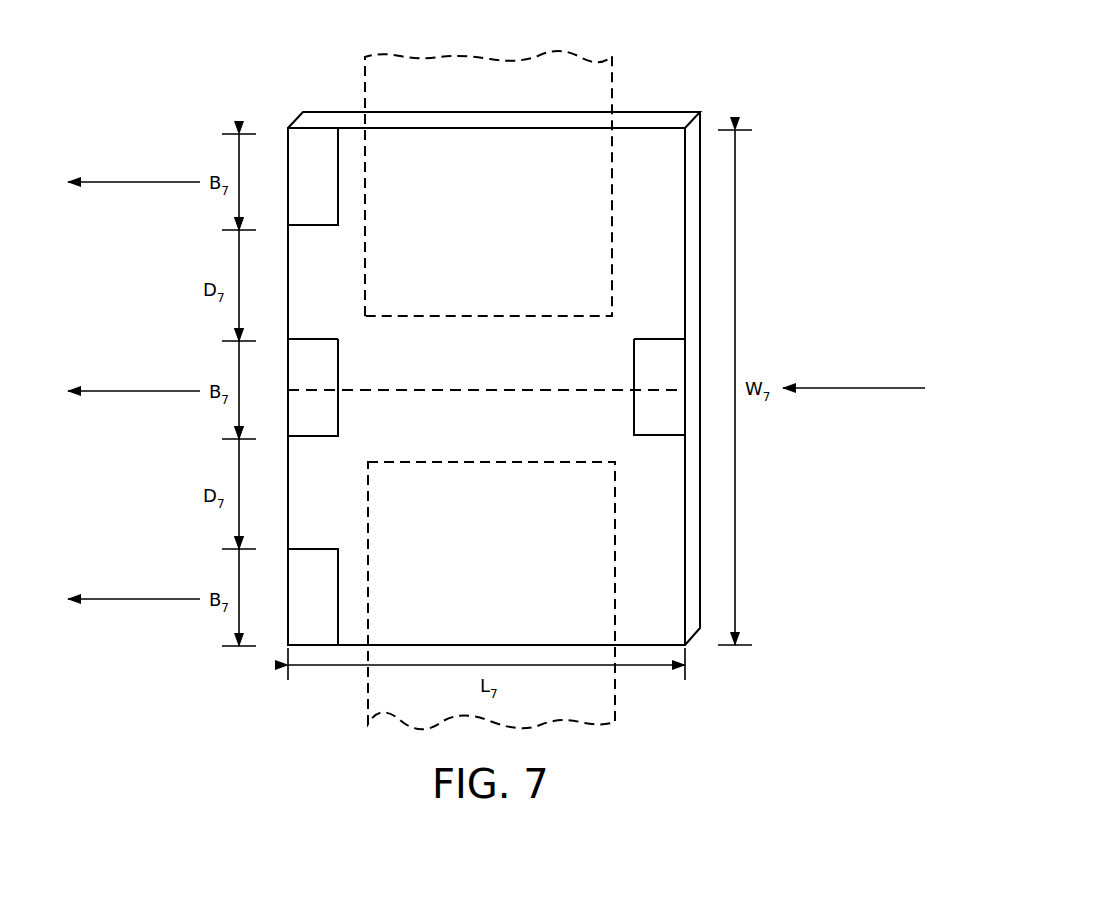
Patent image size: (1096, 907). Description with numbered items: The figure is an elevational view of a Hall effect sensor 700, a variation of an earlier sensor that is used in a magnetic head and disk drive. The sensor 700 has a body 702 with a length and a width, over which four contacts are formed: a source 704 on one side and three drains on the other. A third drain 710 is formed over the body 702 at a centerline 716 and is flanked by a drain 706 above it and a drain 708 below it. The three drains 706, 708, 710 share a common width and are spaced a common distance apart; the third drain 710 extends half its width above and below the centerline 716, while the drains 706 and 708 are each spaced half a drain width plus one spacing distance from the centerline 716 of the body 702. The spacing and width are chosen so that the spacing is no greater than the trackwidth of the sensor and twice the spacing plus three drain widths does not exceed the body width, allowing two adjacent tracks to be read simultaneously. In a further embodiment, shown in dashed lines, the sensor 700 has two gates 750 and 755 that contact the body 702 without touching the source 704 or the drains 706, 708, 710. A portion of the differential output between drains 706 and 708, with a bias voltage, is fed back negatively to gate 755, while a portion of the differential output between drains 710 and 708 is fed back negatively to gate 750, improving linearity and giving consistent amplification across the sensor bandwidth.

The Hall effect sensor 700 is at (481, 391).
The body 702 is at (650, 121).
The source 704 is at (634, 385).
The drain 706 is at (338, 185).
The drain 708 is at (338, 577).
The third drain 710 is at (338, 391).
The centerline 716 is at (495, 389).
The gate 750 is at (567, 71).
The gate 755 is at (585, 705).